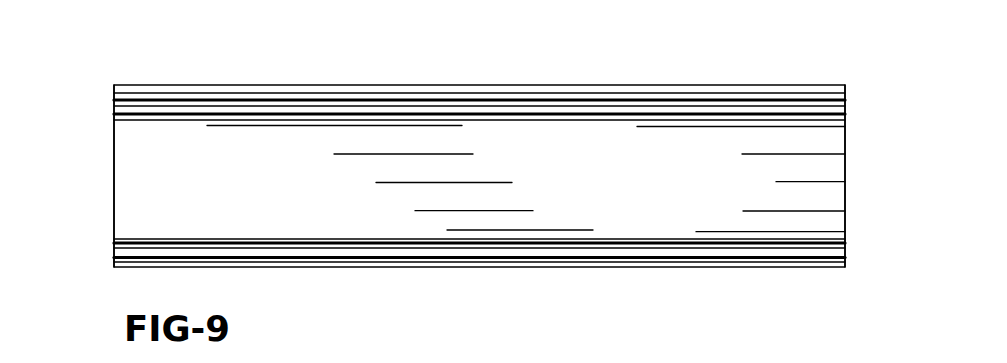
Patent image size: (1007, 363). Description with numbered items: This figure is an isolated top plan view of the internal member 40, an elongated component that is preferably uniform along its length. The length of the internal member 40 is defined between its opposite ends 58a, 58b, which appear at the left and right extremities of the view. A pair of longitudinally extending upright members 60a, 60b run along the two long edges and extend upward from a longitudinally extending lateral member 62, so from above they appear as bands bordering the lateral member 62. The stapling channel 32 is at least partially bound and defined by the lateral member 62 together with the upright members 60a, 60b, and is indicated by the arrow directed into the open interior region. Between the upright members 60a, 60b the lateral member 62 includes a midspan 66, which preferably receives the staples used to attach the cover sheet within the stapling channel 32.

The internal member 40 is at (775, 53).
The stapling channel 32 is at (176, 165).
The end 58a is at (114, 192).
The end 58b is at (845, 202).
The upright member 60a is at (470, 105).
The upright member 60b is at (473, 252).
The lateral member 62 is at (560, 174).
The midspan 66 is at (638, 208).